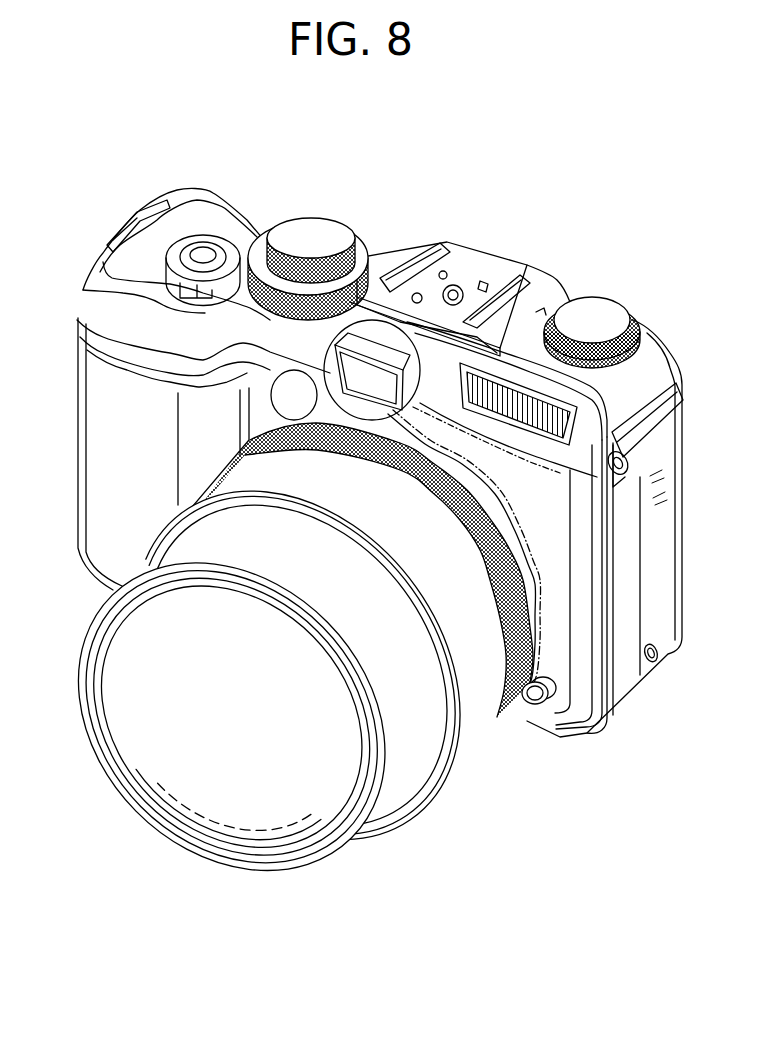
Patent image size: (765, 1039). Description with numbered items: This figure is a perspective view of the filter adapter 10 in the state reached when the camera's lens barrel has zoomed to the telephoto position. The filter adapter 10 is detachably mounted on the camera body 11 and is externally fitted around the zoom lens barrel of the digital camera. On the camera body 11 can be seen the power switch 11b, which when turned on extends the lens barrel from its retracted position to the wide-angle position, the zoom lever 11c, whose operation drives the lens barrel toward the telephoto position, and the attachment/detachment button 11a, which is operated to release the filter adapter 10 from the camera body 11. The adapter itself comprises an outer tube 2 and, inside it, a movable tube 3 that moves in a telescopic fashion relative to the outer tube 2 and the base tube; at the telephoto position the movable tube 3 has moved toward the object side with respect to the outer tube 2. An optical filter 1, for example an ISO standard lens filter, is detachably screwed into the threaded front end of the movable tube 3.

The optical filter 1 is at (150, 793).
The outer tube 2 is at (473, 738).
The movable tube 3 is at (393, 782).
The filter adapter 10 is at (359, 550).
The camera body 11 is at (390, 453).
The attachment/detachment button 11a is at (534, 698).
The power switch 11b is at (249, 242).
The zoom lever 11c is at (150, 300).